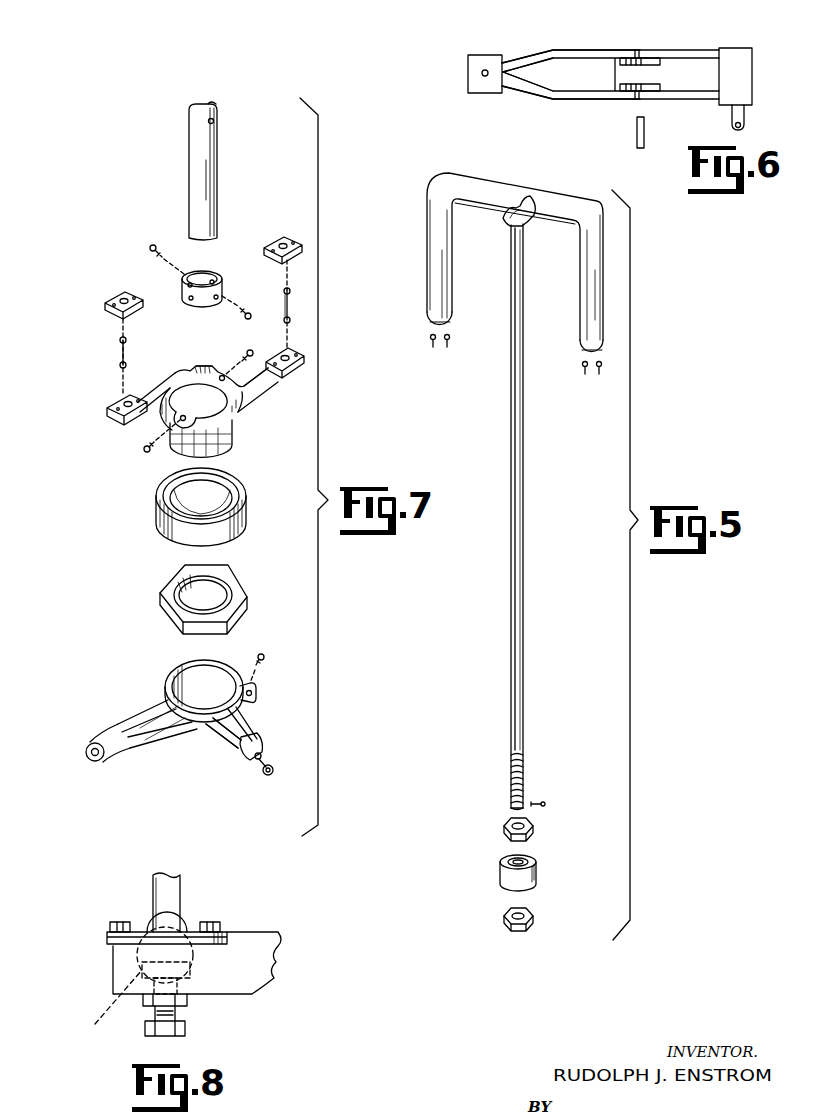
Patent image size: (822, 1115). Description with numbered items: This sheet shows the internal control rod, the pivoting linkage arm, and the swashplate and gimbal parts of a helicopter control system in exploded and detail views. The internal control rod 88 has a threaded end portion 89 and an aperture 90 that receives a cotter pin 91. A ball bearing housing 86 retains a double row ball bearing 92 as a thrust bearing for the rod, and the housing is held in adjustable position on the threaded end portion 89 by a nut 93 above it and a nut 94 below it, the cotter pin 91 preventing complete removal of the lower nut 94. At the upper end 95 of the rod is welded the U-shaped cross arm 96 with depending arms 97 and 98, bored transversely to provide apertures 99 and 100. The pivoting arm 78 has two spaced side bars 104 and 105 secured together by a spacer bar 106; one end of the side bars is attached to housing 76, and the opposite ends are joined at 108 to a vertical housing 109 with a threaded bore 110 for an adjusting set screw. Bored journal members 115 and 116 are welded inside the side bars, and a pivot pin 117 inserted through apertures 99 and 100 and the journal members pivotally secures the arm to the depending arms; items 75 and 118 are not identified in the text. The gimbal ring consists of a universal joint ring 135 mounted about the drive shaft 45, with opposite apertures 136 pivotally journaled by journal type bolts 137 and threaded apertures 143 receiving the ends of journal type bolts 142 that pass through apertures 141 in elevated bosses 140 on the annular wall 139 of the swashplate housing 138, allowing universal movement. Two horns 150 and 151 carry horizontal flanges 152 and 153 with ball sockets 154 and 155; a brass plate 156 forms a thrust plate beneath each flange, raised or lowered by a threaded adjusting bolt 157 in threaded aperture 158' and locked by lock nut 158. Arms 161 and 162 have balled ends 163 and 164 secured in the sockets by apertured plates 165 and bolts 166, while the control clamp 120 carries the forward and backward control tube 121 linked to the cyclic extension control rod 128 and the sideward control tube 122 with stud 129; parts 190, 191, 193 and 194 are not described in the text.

In FIG. 7, the drive shaft 45 is at (196, 168).
In FIG. 6, the tab 75 is at (748, 118).
In FIG. 6, the housing 76 is at (741, 75).
In FIG. 6, the arm 78 is at (700, 50).
In FIG. 5, the ball bearing housing 86 is at (505, 876).
In FIG. 5, the internal control rod 88 is at (526, 682).
In FIG. 5, the threaded end portion 89 is at (527, 776).
In FIG. 5, the aperture 90 is at (525, 805).
In FIG. 5, the cotter pin 91 is at (546, 806).
In FIG. 5, the double row ball bearing 92 is at (538, 860).
In FIG. 5, the nut 93 is at (504, 828).
In FIG. 5, the nut 94 is at (516, 931).
In FIG. 5, the upper end 95 is at (510, 215).
In FIG. 5, the U-shaped cross arm 96 is at (500, 192).
In FIG. 5, the depending arm 97 is at (430, 238).
In FIG. 5, the depending arm 98 is at (592, 278).
In FIG. 5, the aperture 99 is at (455, 320).
In FIG. 5, the aperture 100 is at (606, 342).
In FIG. 6, the side bar 104 is at (584, 50).
In FIG. 6, the side bar 105 is at (582, 99).
In FIG. 6, the spacer bar 106 is at (606, 73).
In FIG. 6, the joined ends 108 is at (506, 70).
In FIG. 6, the vertical housing 109 is at (487, 92).
In FIG. 6, the bore 110 is at (484, 70).
In FIG. 6, the journal member 115 is at (650, 60).
In FIG. 6, the journal member 116 is at (655, 90).
In FIG. 6, the pivot pin 117 is at (645, 146).
In FIG. 5, the screws 118 is at (447, 350).
In FIG. 7, the control clamp 120 is at (250, 708).
In FIG. 7, the forward and backward control tube 121 is at (101, 762).
In FIG. 7, the sideward control tube 122 is at (262, 748).
In FIG. 7, the forward and backward cyclic extension control rod 128 is at (262, 774).
In FIG. 7, the stud 129 is at (272, 776).
In FIG. 7, the universal joint ring 135 is at (202, 272).
In FIG. 7, the apertures 136 is at (187, 285).
In FIG. 7, the journal type bolts 137 is at (244, 312).
In FIG. 7, the swashplate housing 138 is at (197, 430).
In FIG. 7, the annular wall 139 is at (200, 379).
In FIG. 7, the elevated bosses 140 is at (222, 374).
In FIG. 7, the apertures 141 is at (181, 422).
In FIG. 7, the journal type bolts 142 is at (144, 449).
In FIG. 7, the threaded apertures 143 is at (214, 280).
In FIG. 7, the horn 150 is at (163, 388).
In FIG. 8, the horn 150 is at (258, 972).
In FIG. 7, the horn 151 is at (268, 386).
In FIG. 7, the horizontal flange 152 is at (116, 420).
In FIG. 8, the horizontal flange 152 is at (112, 946).
In FIG. 7, the horizontal flange 153 is at (290, 360).
In FIG. 7, the ball socket 154 is at (110, 403).
In FIG. 8, the ball socket 154 is at (113, 980).
In FIG. 7, the ball socket 155 is at (292, 374).
In FIG. 8, the brass plate 156 is at (101, 1006).
In FIG. 8, the threaded adjusting bolt 157 is at (178, 1012).
In FIG. 8, the lock nut 158 is at (145, 1018).
In FIG. 8, the threaded aperture 158' is at (188, 977).
In FIG. 7, the arm 161 is at (118, 341).
In FIG. 8, the arm 161 is at (175, 893).
In FIG. 7, the arm 162 is at (291, 305).
In FIG. 7, the balled end 163 is at (118, 366).
In FIG. 8, the balled end 163 is at (188, 930).
In FIG. 7, the balled end 164 is at (291, 320).
In FIG. 7, the apertured plate 165 is at (120, 338).
In FIG. 8, the apertured plate 165 is at (107, 935).
In FIG. 7, the bolts 166 is at (292, 294).
In FIG. 8, the bolts 166 is at (118, 922).
In FIG. 7, the bore 190 is at (203, 485).
In FIG. 7, the ring 191 is at (236, 476).
In FIG. 7, the skirt 193 is at (240, 428).
In FIG. 7, the hex nut 194 is at (246, 586).